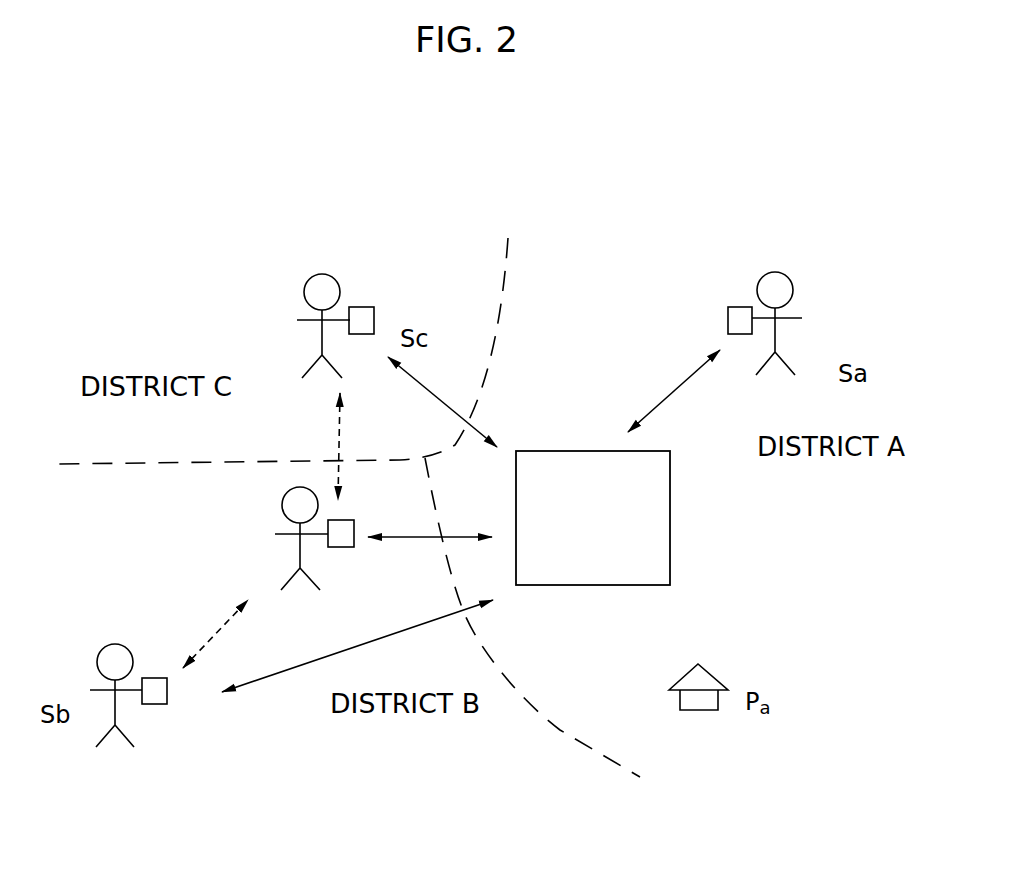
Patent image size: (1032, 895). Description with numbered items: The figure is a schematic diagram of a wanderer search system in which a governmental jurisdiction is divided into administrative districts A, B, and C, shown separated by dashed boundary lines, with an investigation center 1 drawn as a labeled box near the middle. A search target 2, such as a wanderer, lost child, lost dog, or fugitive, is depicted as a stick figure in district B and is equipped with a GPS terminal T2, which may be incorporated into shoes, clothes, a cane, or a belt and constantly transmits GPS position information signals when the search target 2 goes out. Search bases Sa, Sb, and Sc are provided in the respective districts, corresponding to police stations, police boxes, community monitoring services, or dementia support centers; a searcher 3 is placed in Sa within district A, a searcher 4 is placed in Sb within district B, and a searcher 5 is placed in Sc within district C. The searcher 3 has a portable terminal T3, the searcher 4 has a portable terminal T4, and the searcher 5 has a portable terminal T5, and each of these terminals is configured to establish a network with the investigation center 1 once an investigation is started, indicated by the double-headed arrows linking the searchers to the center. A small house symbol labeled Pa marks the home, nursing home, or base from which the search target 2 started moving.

The investigation center 1 is at (670, 517).
The search target 2 is at (277, 547).
The searcher 3 is at (808, 342).
The searcher 4 is at (94, 678).
The searcher 5 is at (298, 298).
The GPS terminal T2 is at (340, 547).
The portable terminal T3 is at (728, 320).
The portable terminal T4 is at (160, 704).
The portable terminal T5 is at (362, 307).